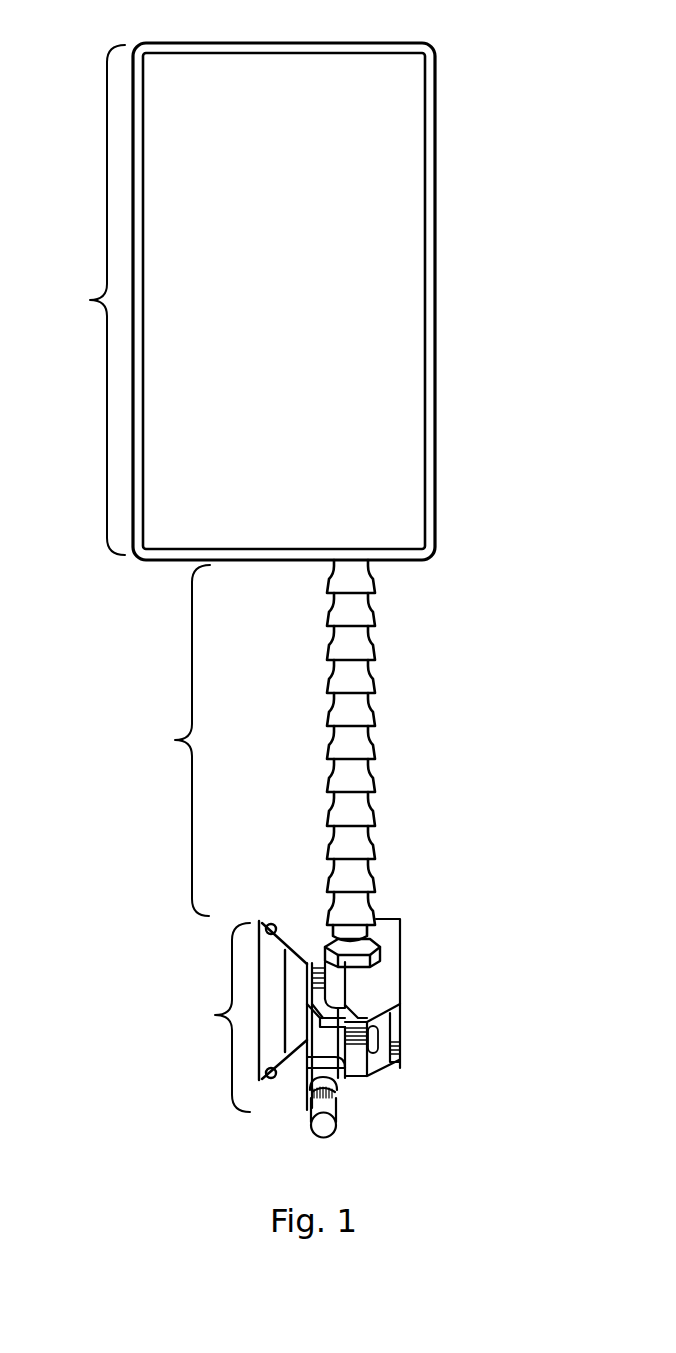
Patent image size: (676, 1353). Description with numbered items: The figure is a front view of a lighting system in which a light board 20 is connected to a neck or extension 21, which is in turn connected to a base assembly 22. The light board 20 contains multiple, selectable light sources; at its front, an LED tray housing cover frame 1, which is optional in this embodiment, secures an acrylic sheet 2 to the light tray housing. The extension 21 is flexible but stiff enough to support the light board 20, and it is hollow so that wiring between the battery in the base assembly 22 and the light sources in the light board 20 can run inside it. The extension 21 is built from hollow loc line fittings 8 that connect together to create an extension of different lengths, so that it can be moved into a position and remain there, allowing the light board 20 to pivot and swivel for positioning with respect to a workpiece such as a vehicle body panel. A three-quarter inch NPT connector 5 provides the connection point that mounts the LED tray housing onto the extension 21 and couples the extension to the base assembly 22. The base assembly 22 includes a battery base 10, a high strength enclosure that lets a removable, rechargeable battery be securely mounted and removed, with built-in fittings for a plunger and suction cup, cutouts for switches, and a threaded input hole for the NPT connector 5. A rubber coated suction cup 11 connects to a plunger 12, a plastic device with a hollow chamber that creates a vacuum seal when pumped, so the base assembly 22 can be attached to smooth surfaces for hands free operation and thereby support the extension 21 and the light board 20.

The LED tray housing cover frame 1 is at (436, 98).
The acrylic sheet 2 is at (427, 155).
The light board 20 is at (90, 300).
The extension 21 is at (175, 740).
The base assembly 22 is at (213, 1017).
The loc line fitting 8 is at (376, 770).
The NPT connector 5 is at (381, 945).
The battery base 10 is at (401, 975).
The suction cup 11 is at (292, 950).
The plunger 12 is at (338, 1113).